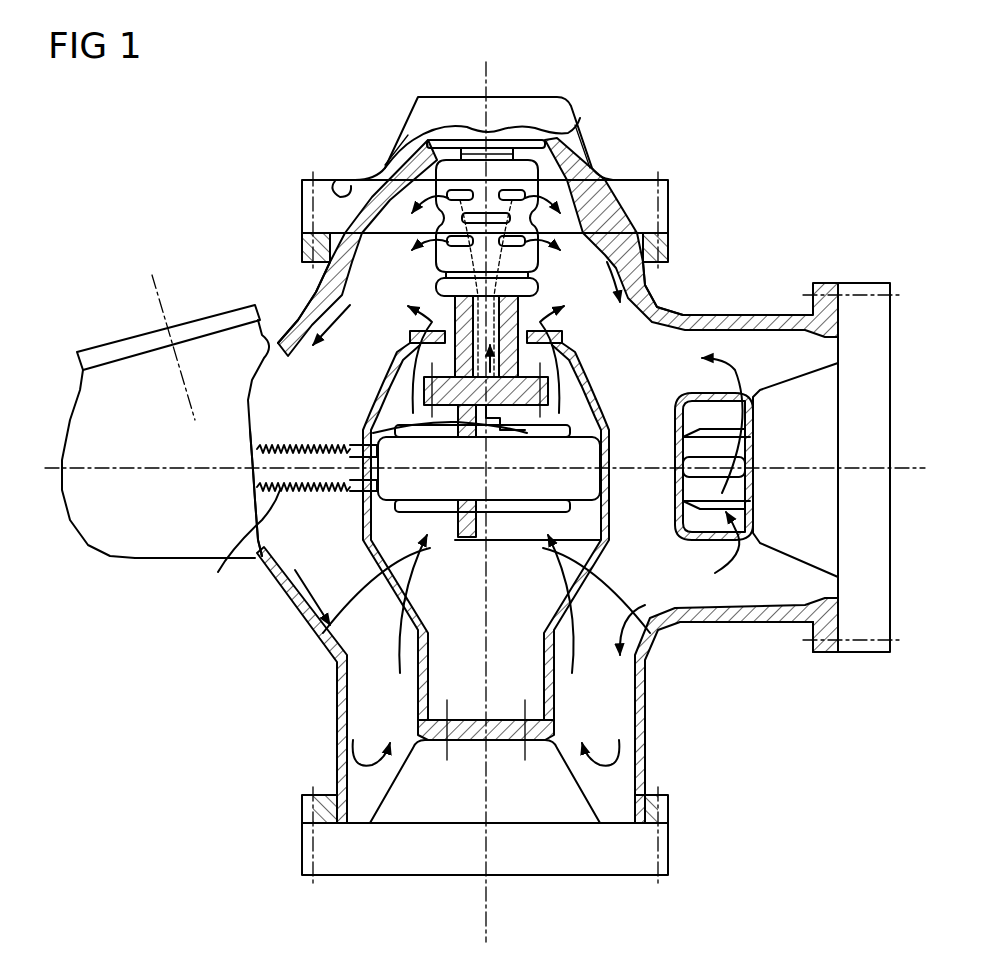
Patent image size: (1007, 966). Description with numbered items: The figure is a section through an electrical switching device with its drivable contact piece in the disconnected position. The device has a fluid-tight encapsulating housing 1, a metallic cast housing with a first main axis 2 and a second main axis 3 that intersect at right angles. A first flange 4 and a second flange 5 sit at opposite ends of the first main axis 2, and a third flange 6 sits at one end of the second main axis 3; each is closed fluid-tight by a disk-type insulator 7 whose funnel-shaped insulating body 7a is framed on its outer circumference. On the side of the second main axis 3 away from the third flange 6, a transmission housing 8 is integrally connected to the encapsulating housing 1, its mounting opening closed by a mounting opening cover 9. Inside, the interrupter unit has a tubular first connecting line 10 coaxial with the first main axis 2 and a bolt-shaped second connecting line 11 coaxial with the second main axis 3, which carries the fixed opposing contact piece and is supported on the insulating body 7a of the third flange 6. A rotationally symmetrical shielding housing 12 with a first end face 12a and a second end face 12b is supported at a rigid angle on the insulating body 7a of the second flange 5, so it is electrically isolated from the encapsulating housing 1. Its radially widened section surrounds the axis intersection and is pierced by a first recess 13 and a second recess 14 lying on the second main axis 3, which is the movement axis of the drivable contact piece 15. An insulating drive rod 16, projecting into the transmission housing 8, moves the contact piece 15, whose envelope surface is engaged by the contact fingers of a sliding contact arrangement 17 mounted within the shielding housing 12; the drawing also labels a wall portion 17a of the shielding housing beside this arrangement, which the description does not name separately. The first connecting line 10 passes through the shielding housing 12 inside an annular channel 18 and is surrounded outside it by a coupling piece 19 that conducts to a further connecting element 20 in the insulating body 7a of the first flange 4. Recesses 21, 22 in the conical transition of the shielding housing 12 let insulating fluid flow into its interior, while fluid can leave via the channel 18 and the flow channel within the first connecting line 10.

The encapsulating housing 1 is at (760, 318).
The first main axis 2 is at (486, 924).
The second main axis 3 is at (913, 467).
The first flange 4 is at (668, 250).
The second flange 5 is at (668, 810).
The third flange 6 is at (828, 652).
The disk-type insulator 7 is at (668, 205).
The insulating body 7a is at (588, 163).
The transmission housing 8 is at (168, 565).
The mounting opening cover 9 is at (126, 333).
The first connecting line 10 is at (656, 312).
The second connecting line 11 is at (752, 493).
The shielding housing 12 is at (383, 380).
The first end face 12a is at (565, 330).
The second end face 12b is at (462, 718).
The first recess 13 is at (608, 504).
The second recess 14 is at (258, 553).
The drivable contact piece 15 is at (585, 487).
The drive rod 16 is at (218, 560).
The sliding contact arrangement 17 is at (372, 433).
The sleeve wall 17a is at (604, 418).
The channel 18 is at (425, 328).
The coupling piece 19 is at (553, 145).
The further connecting element 20 is at (428, 118).
The recess 21 is at (330, 640).
The recess 22 is at (645, 630).